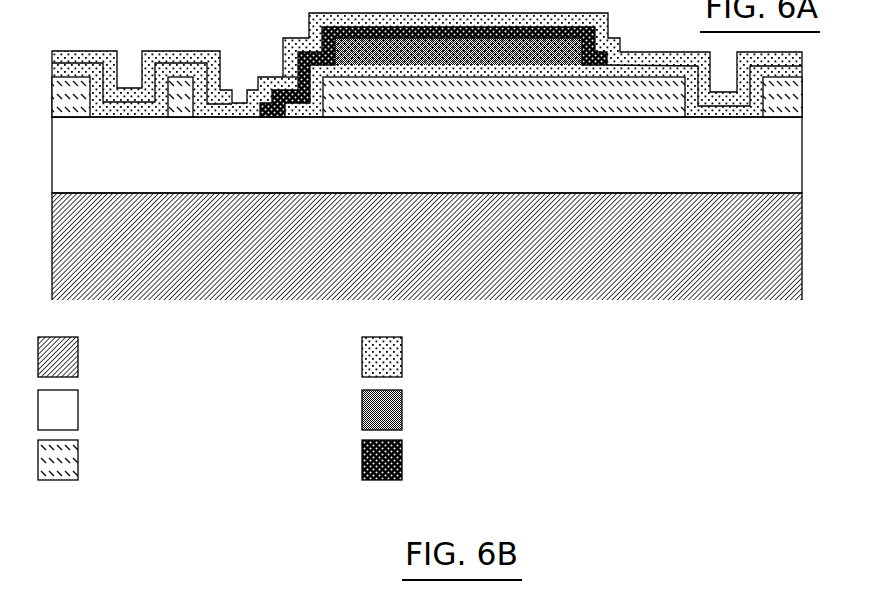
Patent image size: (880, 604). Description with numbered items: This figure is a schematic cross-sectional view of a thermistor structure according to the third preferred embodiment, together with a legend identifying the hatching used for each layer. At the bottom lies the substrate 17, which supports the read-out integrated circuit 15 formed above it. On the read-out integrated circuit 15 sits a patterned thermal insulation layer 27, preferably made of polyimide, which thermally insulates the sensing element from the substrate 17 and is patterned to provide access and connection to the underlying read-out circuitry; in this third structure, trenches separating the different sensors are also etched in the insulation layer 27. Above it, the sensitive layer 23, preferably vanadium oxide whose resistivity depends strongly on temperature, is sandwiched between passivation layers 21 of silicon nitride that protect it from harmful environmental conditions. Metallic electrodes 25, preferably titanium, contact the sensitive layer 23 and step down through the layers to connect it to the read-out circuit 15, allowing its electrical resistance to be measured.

The read-out integrated circuit 15 is at (420, 273).
The substrate 17 is at (420, 285).
The passivation layer 21 is at (427, 195).
The sensitive layer 23 is at (458, 234).
The metallic electrodes 25 is at (433, 253).
The thermal insulation layer 27 is at (420, 278).